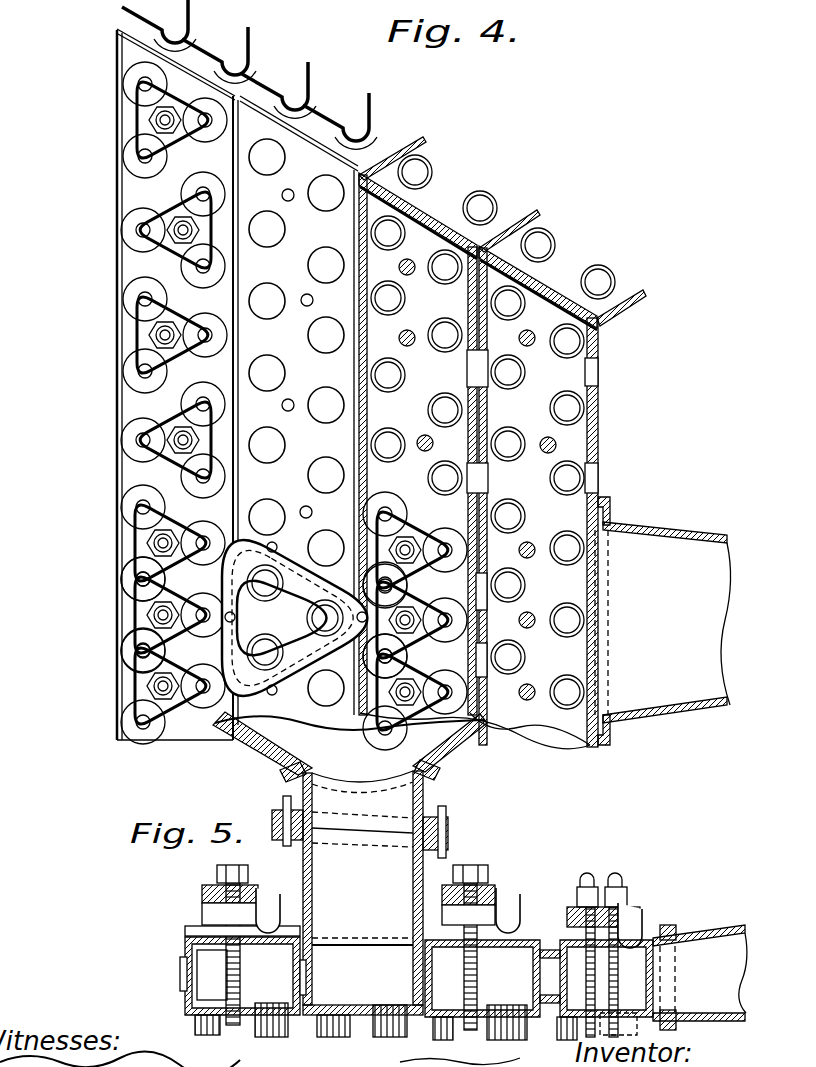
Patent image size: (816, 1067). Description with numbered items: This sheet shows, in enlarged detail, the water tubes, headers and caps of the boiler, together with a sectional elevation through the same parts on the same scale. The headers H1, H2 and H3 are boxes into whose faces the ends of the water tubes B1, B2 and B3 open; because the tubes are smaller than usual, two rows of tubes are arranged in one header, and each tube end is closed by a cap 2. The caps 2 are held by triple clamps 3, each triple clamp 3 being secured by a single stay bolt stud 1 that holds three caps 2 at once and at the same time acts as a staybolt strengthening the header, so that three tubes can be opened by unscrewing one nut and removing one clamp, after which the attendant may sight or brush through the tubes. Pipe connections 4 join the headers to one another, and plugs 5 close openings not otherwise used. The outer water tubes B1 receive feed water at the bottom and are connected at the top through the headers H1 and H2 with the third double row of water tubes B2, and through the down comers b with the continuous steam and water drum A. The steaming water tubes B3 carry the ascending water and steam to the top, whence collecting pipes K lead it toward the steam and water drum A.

In FIG. 4, the stay bolt stud 1 is at (148, 498).
In FIG. 5, the stay bolt stud 1 is at (230, 955).
In FIG. 4, the cap 2 is at (146, 403).
In FIG. 5, the cap 2 is at (205, 928).
In FIG. 4, the triple clamp 3 is at (168, 440).
In FIG. 5, the triple clamp 3 is at (264, 892).
In FIG. 4, the pipe connection 4 is at (480, 480).
In FIG. 5, the pipe connection 4 is at (318, 972).
In FIG. 4, the plug 5 is at (598, 369).
In FIG. 5, the plug 5 is at (182, 975).
In FIG. 4, the down comer b is at (294, 618).
In FIG. 5, the down comer b is at (360, 888).
In FIG. 5, the continuous steam and water drum A is at (350, 752).
In FIG. 4, the collecting pipe K is at (663, 621).
In FIG. 5, the collecting pipe K is at (700, 977).
In FIG. 5, the water tube B1 is at (255, 1022).
In FIG. 5, the water tube B2 is at (368, 1025).
In FIG. 4, the steaming water tube B3 is at (397, 378).
In FIG. 5, the steaming water tube B3 is at (470, 1035).
In FIG. 5, the header H1 is at (242, 976).
In FIG. 5, the header H2 is at (363, 976).
In FIG. 5, the header H3 is at (540, 978).